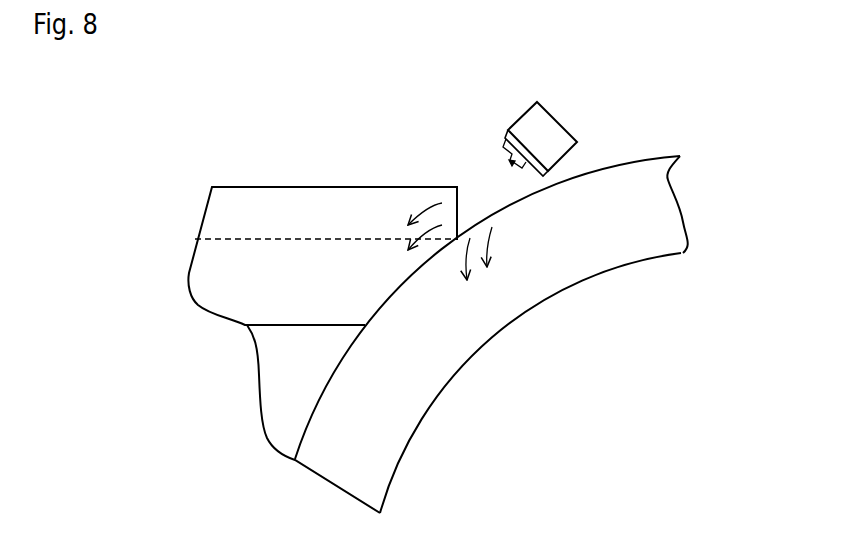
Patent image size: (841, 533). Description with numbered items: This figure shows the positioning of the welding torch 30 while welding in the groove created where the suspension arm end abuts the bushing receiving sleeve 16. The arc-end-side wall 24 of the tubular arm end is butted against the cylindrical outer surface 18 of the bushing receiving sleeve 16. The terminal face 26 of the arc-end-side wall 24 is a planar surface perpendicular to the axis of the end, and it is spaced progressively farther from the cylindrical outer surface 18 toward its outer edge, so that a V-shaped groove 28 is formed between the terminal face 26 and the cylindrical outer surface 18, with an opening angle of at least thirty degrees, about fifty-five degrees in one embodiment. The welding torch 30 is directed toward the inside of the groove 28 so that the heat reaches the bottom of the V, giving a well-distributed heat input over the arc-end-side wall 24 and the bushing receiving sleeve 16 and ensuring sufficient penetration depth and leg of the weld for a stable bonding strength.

The bushing receiving sleeve 16 is at (517, 378).
The cylindrical outer surface 18 is at (607, 165).
The arc-end-side wall 24 is at (328, 212).
The terminal face 26 is at (459, 200).
The V-shaped groove 28 is at (479, 186).
The welding torch 30 is at (542, 132).